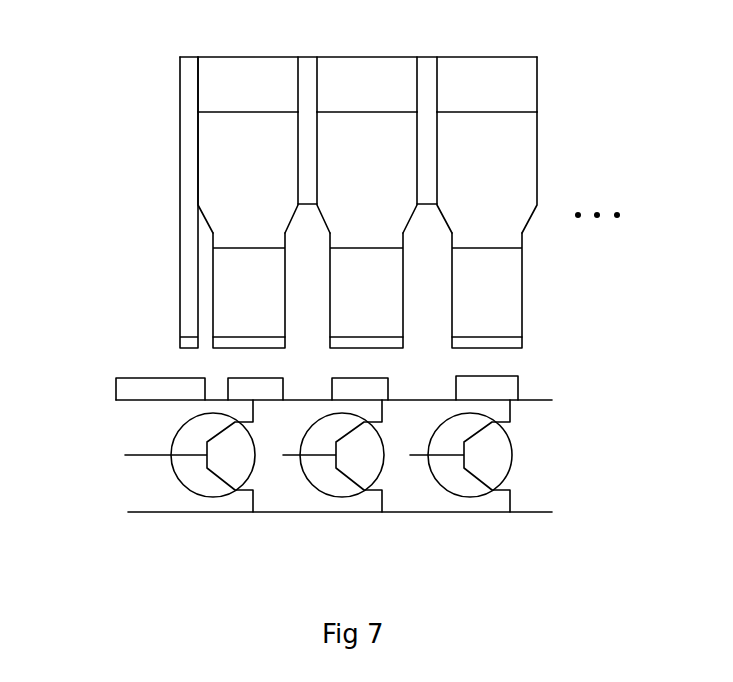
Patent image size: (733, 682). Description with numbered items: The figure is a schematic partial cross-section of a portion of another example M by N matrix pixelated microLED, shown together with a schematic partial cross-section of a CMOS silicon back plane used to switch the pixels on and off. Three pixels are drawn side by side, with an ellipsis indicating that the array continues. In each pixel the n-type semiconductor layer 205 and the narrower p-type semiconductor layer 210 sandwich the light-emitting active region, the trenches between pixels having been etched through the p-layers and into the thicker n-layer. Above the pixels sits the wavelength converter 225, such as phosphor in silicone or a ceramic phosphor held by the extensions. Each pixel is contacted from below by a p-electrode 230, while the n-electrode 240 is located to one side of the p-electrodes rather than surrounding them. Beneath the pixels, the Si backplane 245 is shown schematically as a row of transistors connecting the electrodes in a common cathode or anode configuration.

The n-type semiconductor layer 205 is at (518, 180).
The p-type semiconductor layer 210 is at (510, 293).
The wavelength converter 225 is at (518, 75).
The p-electrode 230 is at (515, 343).
The n-electrode 240 is at (192, 248).
The Si backplane 245 is at (125, 512).